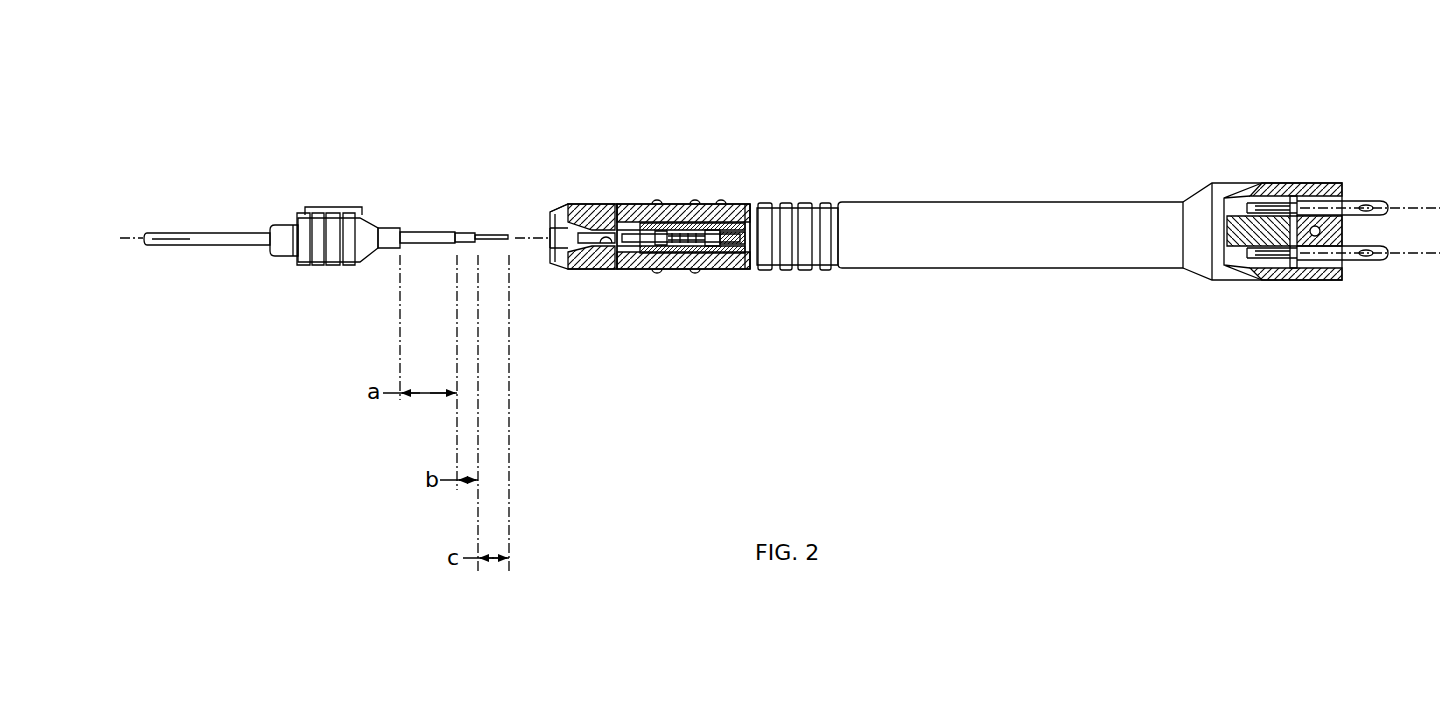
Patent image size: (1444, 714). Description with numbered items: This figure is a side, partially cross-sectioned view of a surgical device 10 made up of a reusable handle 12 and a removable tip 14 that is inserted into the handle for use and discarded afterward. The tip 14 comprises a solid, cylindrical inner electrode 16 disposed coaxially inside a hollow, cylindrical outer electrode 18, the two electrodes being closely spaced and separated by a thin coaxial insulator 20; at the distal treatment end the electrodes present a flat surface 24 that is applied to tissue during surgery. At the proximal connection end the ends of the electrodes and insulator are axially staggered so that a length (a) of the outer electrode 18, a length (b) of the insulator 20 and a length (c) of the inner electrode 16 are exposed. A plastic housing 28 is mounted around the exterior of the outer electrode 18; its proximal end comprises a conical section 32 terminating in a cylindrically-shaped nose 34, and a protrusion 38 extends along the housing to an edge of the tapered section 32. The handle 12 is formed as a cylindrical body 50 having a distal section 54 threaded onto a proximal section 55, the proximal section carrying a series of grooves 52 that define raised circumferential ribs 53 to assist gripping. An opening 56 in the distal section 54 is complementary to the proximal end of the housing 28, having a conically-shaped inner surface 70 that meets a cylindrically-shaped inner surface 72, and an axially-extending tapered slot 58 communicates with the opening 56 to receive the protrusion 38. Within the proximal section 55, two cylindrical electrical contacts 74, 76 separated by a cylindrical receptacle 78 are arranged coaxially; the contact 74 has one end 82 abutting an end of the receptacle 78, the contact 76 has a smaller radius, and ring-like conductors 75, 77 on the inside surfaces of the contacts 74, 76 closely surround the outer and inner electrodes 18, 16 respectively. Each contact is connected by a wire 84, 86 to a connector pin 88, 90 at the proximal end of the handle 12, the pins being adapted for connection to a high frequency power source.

The surgical device 10 is at (897, 115).
The reusable handle 12 is at (1090, 176).
The removable tip 14 is at (255, 200).
The inner electrode 16 is at (490, 235).
The outer electrode 18 is at (432, 232).
The insulator 20 is at (466, 233).
The flat surface 24 is at (143, 247).
The plastic housing 28 is at (303, 262).
The conical section 32 is at (362, 220).
The nose 34 is at (385, 250).
The protrusion 38 is at (306, 207).
The cylindrical body 50 is at (1013, 203).
The grooves 52 is at (836, 205).
The ribs 53 is at (805, 270).
The distal section 54 is at (598, 204).
The proximal section 55 is at (664, 270).
The opening 56 is at (546, 212).
The slot 58 is at (568, 200).
The conically-shaped inner surface 70 is at (549, 258).
The cylindrically-shaped inner surface 72 is at (583, 246).
The electrical contact 74 is at (645, 229).
The ring-like conductor 75 is at (630, 262).
The electrical contact 76 is at (713, 229).
The ring-like conductor 77 is at (706, 262).
The receptacle 78 is at (690, 223).
The end of contact 82 is at (684, 262).
The wire 84 is at (735, 231).
The wire 86 is at (748, 264).
The connector pin 88 is at (1370, 202).
The connector pin 90 is at (1385, 250).